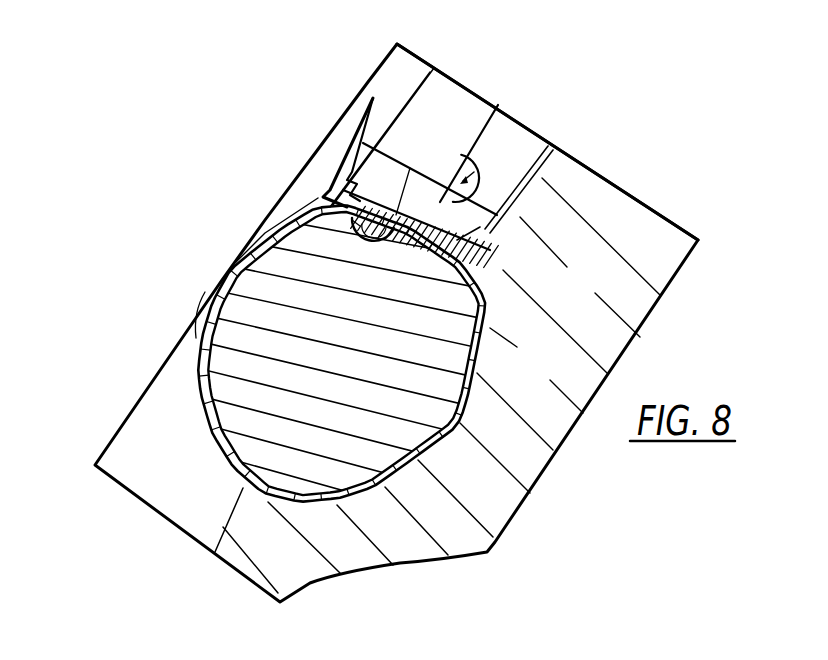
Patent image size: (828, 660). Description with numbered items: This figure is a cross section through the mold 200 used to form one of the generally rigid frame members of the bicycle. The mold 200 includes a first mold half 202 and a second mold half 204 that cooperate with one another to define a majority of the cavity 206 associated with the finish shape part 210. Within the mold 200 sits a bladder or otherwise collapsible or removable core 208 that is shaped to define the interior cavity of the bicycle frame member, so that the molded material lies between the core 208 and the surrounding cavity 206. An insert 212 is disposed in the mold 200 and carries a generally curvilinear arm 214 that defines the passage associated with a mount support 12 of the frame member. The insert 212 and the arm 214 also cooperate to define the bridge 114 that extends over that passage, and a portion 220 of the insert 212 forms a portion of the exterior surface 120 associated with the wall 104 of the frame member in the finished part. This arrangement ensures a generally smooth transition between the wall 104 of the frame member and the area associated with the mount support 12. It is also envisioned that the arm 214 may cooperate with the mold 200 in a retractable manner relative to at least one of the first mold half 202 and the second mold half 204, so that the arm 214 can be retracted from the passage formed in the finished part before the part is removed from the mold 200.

The mount support 12 is at (330, 183).
The wall 104 is at (477, 370).
The bridge 114 is at (372, 232).
The exterior surface 120 is at (490, 303).
The mold 200 is at (553, 113).
The first mold half 202 is at (632, 215).
The second mold half 204 is at (417, 50).
The cavity 206 is at (197, 397).
The core 208 is at (365, 409).
The finish shape part 210 is at (212, 458).
The insert 212 is at (410, 168).
The curvilinear arm 214 is at (360, 226).
The portion of insert 220 is at (490, 103).